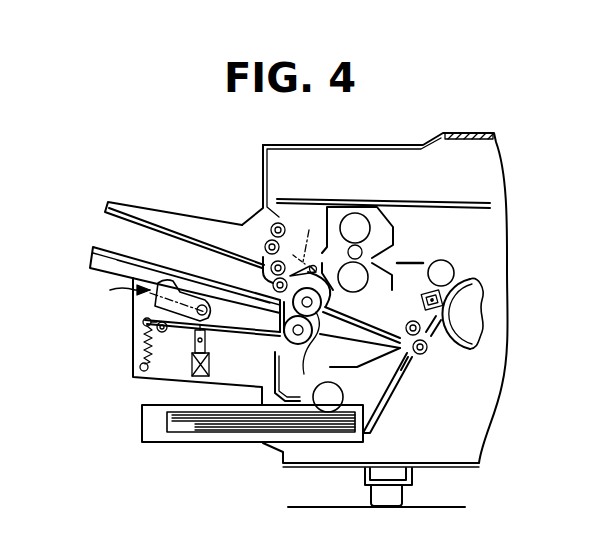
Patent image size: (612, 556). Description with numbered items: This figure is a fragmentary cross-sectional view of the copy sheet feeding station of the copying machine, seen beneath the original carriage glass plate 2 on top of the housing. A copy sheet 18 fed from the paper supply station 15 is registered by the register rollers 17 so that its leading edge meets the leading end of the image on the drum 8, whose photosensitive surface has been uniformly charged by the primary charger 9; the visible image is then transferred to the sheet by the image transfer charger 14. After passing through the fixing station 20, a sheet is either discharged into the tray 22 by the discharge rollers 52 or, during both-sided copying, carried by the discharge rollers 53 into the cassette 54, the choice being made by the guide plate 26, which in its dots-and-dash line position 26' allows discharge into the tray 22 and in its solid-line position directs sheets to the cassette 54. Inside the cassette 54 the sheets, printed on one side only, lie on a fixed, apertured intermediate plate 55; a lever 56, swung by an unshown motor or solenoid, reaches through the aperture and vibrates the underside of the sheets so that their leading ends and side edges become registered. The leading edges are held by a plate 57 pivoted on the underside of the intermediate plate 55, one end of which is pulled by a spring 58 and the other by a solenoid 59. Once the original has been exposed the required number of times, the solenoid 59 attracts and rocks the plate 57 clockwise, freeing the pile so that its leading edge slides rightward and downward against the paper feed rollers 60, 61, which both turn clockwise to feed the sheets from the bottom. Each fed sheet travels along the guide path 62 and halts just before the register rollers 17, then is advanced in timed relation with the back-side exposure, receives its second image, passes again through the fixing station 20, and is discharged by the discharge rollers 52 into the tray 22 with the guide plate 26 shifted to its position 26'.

The original carriage glass plate 2 is at (463, 140).
The drum 8 is at (462, 353).
The primary charger 9 is at (462, 276).
The image transfer charger 14 is at (422, 299).
The paper supply station 15 is at (344, 394).
The register rollers 17 is at (419, 355).
The copy sheet 18 is at (200, 420).
The fixing station 20 is at (380, 238).
The tray 22 is at (160, 206).
The guide plate 26 is at (333, 294).
The dots-and-dash line position of guide plate 26' is at (309, 240).
The discharge rollers 52 is at (284, 222).
The discharge rollers 53 is at (262, 259).
The cassette 54 is at (80, 299).
The intermediate plate 55 is at (92, 253).
The lever 56 is at (160, 293).
The plate 57 is at (246, 333).
The spring 58 is at (142, 345).
The solenoid 59 is at (192, 362).
The paper feed roller 60 is at (305, 352).
The paper feed roller 61 is at (330, 367).
The guide path 62 is at (362, 340).